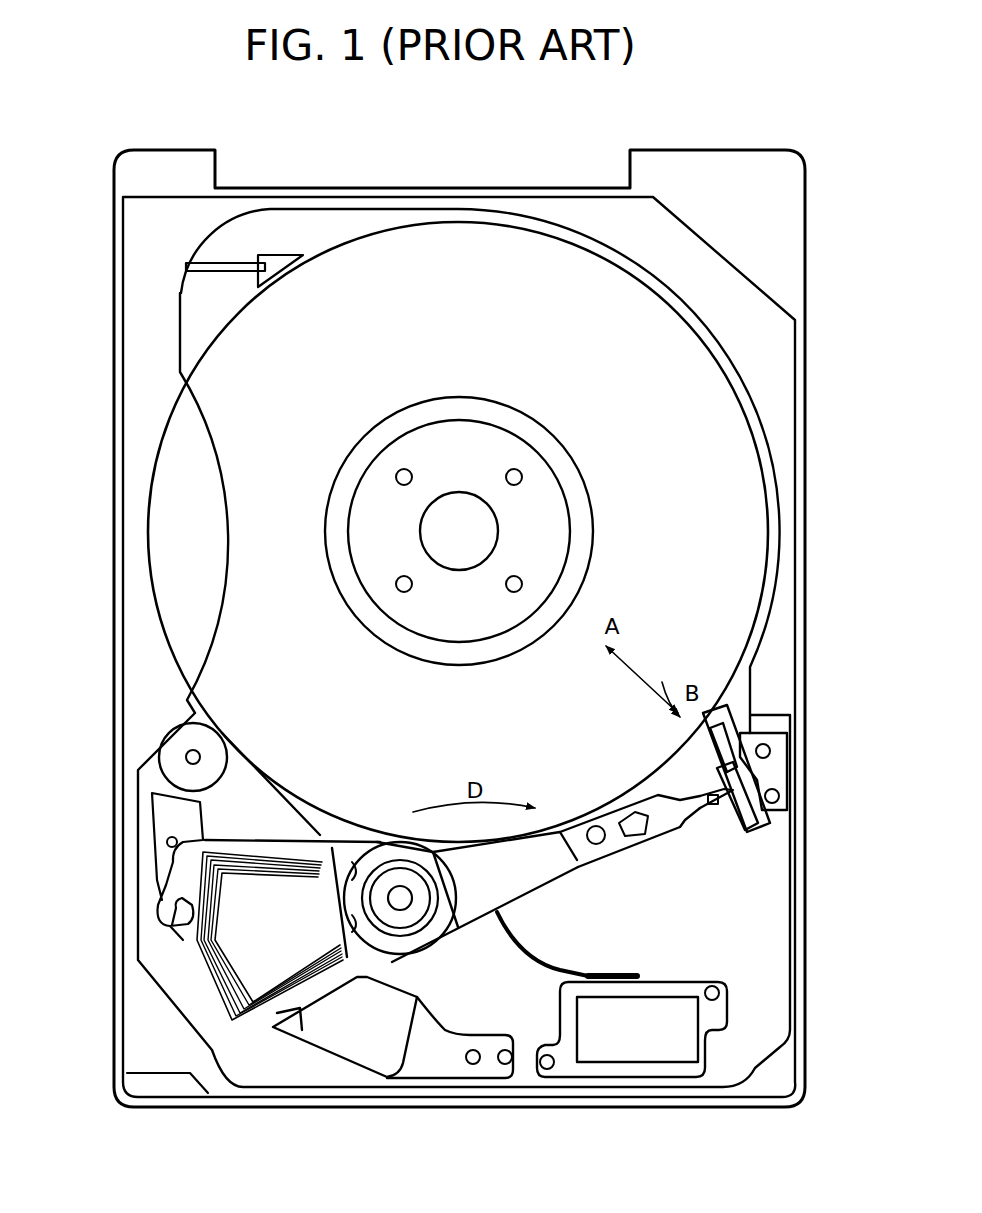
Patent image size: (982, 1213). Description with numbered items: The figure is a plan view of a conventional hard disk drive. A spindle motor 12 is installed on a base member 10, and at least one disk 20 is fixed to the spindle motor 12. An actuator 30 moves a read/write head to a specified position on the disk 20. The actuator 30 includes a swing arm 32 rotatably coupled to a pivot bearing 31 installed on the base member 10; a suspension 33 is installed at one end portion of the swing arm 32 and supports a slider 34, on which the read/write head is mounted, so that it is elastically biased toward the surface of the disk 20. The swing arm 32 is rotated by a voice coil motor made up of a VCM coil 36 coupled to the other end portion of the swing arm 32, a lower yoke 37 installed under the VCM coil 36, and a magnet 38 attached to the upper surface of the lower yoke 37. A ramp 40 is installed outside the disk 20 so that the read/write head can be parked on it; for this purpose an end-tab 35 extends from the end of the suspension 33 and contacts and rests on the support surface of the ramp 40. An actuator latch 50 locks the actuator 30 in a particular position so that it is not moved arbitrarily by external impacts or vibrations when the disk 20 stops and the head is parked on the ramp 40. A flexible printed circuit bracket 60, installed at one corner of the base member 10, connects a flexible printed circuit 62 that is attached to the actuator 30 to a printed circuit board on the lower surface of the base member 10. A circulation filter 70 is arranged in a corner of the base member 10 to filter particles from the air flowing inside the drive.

The base member 10 is at (782, 667).
The spindle motor 12 is at (492, 447).
The disk 20 is at (750, 492).
The actuator 30 is at (544, 896).
The pivot bearing 31 is at (400, 898).
The swing arm 32 is at (523, 878).
The suspension 33 is at (686, 815).
The slider 34 is at (712, 805).
The end-tab 35 is at (735, 795).
The VCM coil 36 is at (253, 1010).
The lower yoke 37 is at (283, 1063).
The magnet 38 is at (372, 1060).
The ramp 40 is at (735, 745).
The actuator latch 50 is at (160, 853).
The flexible printed circuit bracket 60 is at (627, 1053).
The flexible printed circuit 62 is at (585, 960).
The circulation filter 70 is at (235, 265).